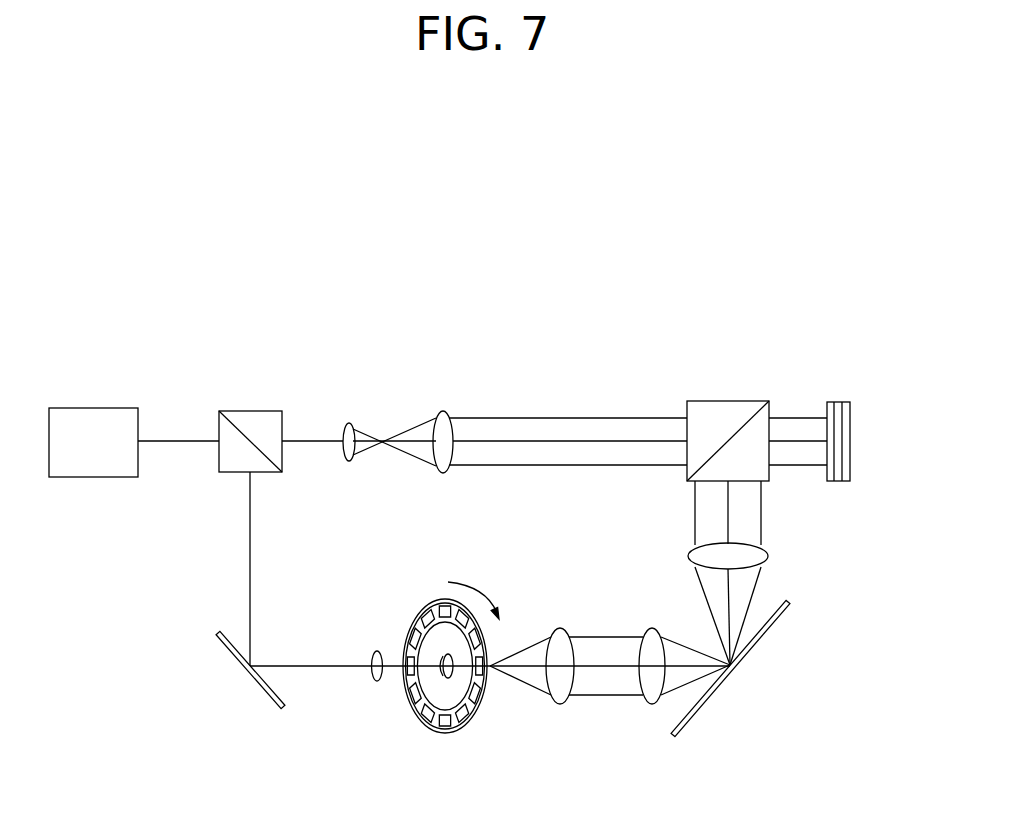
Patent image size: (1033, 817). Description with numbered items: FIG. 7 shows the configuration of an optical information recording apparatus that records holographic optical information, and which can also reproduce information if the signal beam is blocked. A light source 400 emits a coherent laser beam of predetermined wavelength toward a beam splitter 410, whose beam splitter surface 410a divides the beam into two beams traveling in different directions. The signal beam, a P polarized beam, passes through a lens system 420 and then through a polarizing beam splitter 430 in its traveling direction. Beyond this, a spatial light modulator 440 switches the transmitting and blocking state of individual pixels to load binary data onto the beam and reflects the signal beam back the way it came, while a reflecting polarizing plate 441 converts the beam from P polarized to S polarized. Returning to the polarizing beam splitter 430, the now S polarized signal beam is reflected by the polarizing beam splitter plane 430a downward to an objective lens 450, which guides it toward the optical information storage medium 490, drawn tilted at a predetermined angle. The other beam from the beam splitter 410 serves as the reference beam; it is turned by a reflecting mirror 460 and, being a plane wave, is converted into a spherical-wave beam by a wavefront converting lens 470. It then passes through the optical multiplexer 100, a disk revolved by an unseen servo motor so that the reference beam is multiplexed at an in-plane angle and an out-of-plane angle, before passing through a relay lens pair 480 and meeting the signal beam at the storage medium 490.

The light source 400 is at (124, 408).
The beam splitter 410 is at (258, 410).
The beam splitter surface 410a is at (232, 422).
The lens system 420 is at (345, 394).
The polarizing beam splitter 430 is at (705, 401).
The polarizing beam splitter plane 430a is at (749, 418).
The spatial light modulator 440 is at (833, 402).
The reflecting polarizing plate 441 is at (845, 402).
The objective lens 450 is at (766, 557).
The reflecting mirror 460 is at (249, 683).
The wavefront converting lens 470 is at (378, 682).
The relay lens unit 480 is at (552, 607).
The optical information storage medium 490 is at (776, 628).
The optical multiplexer 100 is at (445, 735).